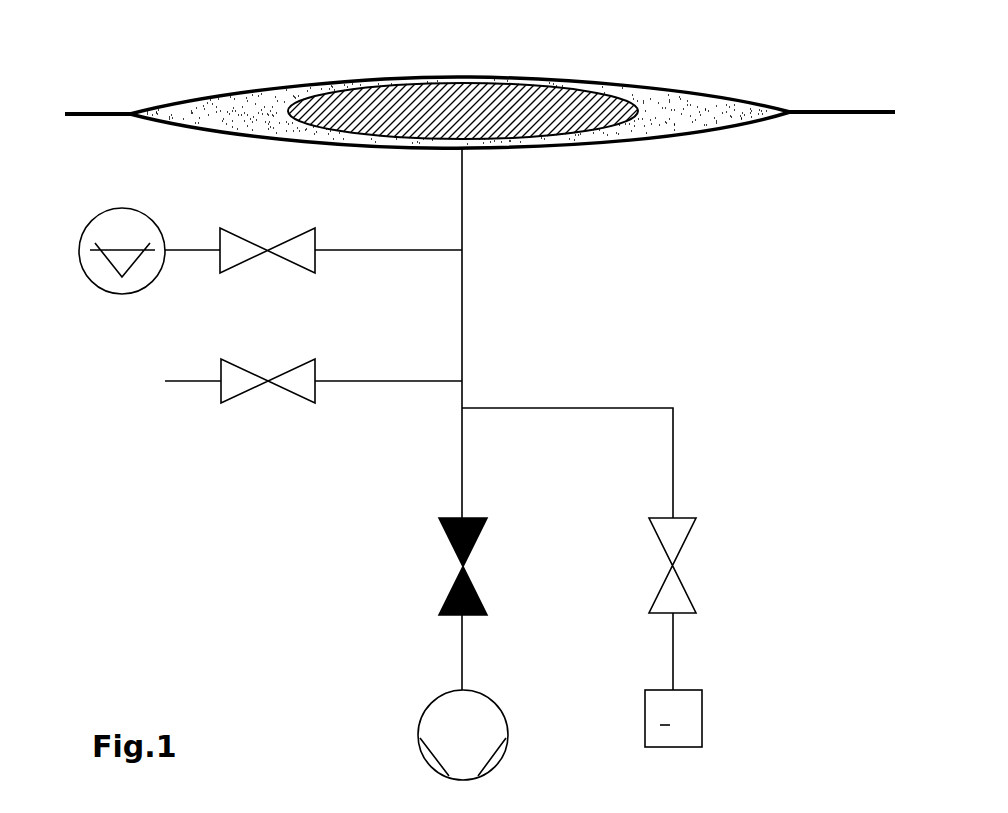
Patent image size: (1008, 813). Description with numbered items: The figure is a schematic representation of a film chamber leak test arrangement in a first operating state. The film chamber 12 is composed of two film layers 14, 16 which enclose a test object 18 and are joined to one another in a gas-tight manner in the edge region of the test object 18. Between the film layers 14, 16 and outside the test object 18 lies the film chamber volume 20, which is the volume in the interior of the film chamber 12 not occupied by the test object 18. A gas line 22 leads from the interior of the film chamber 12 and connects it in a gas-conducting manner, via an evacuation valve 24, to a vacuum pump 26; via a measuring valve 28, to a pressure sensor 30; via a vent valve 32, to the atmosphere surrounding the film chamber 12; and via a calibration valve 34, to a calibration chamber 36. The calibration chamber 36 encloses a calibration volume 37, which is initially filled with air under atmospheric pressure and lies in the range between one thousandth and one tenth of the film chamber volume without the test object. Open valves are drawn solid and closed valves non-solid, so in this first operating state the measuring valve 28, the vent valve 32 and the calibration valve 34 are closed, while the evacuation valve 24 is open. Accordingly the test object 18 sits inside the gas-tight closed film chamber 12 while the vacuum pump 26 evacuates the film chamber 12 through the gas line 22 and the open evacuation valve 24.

The film chamber 12 is at (765, 169).
The film layer 14 is at (733, 100).
The film layer 16 is at (745, 124).
The test object 18 is at (553, 80).
The film chamber volume 20 is at (233, 108).
The gas line 22 is at (462, 190).
The evacuation valve 24 is at (428, 568).
The vacuum pump 26 is at (440, 716).
The measuring valve 28 is at (262, 213).
The pressure sensor 30 is at (110, 220).
The vent valve 32 is at (266, 401).
The calibration valve 34 is at (732, 573).
The calibration chamber 36 is at (703, 718).
The calibration volume 37 is at (660, 725).